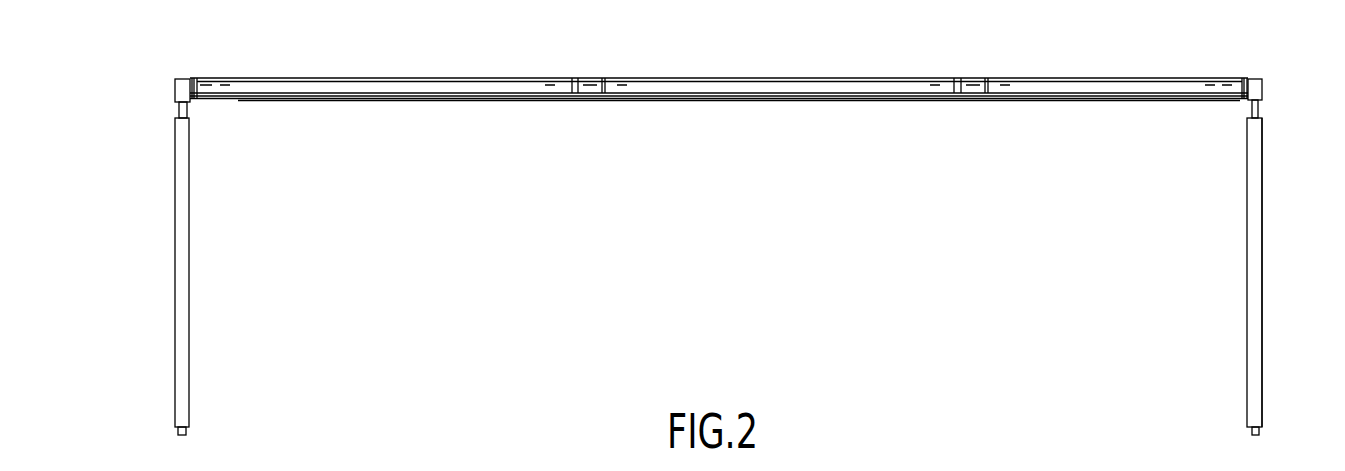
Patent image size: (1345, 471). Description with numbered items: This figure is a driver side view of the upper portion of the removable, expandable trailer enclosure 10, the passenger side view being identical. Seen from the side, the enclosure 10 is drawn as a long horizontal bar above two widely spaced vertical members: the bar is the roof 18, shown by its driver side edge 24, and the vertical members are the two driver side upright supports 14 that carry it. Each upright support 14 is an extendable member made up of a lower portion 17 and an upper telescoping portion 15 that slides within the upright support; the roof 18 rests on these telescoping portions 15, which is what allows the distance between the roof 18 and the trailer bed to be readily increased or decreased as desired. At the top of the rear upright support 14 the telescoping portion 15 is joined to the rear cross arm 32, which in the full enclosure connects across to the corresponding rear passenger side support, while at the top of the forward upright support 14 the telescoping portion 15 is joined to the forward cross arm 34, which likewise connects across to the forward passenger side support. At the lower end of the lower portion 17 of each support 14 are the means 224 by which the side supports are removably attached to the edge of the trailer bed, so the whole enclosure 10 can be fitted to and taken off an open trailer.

The removable, expandable trailer enclosure 10 is at (1084, 70).
The driver side upright support 14 is at (188, 274).
The upper telescoping portion 15 is at (187, 106).
The lower portion 17 is at (1263, 280).
The roof 18 is at (703, 78).
The driver side edge 24 is at (897, 82).
The rear cross arm 32 is at (184, 78).
The forward cross arm 34 is at (1258, 85).
The means for removably attaching 224 is at (188, 431).